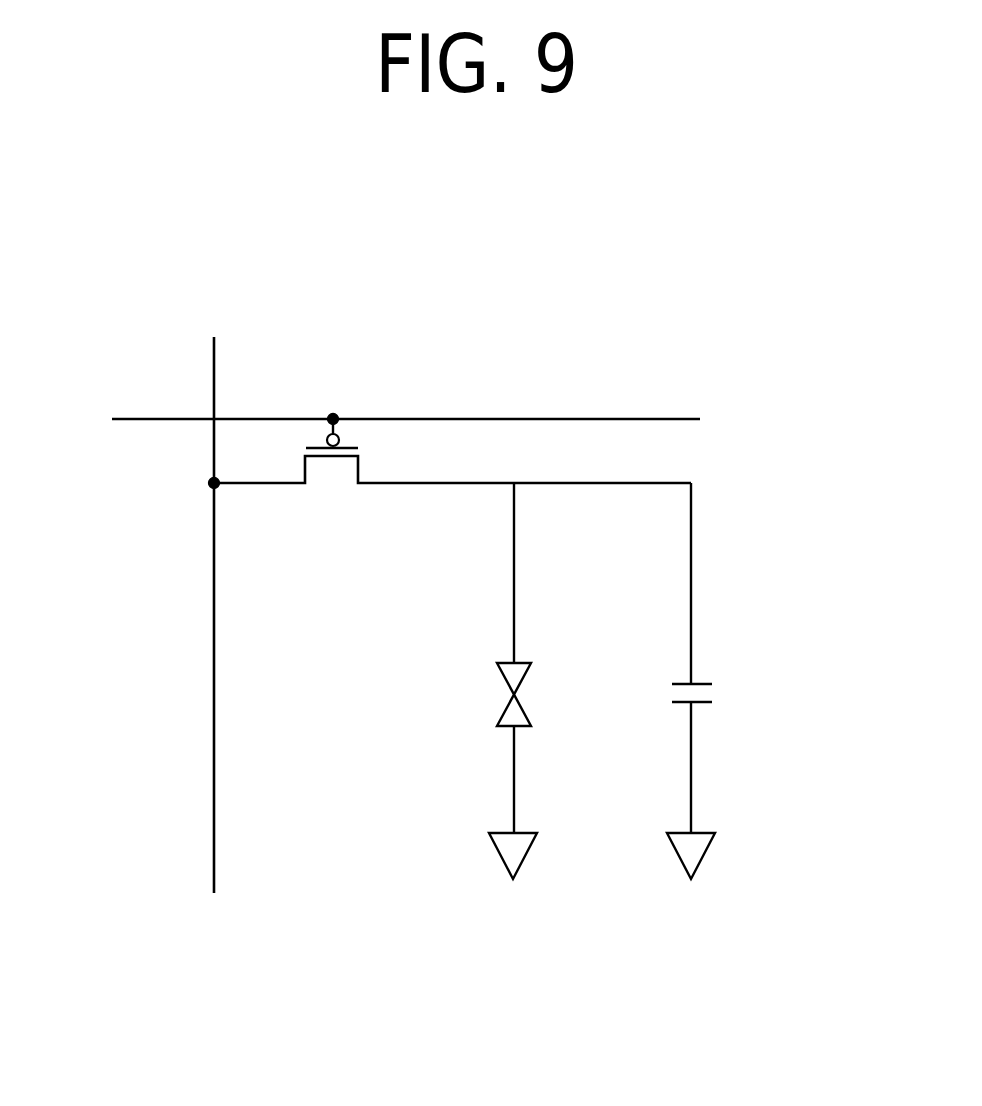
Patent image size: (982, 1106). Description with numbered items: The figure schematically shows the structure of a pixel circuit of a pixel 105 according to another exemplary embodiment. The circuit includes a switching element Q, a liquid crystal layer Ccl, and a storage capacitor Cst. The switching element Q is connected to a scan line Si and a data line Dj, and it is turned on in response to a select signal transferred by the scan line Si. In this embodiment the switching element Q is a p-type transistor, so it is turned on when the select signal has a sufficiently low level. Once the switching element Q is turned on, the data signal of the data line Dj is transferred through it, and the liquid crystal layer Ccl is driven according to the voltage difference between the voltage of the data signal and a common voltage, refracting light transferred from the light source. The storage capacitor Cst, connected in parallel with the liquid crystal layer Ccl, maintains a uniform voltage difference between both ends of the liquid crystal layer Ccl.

The pixel 105 is at (720, 290).
The data line Dj is at (223, 589).
The scan line Si is at (381, 416).
The switching element Q is at (452, 476).
The liquid crystal layer Ccl is at (482, 706).
The storage capacitor Cst is at (659, 706).